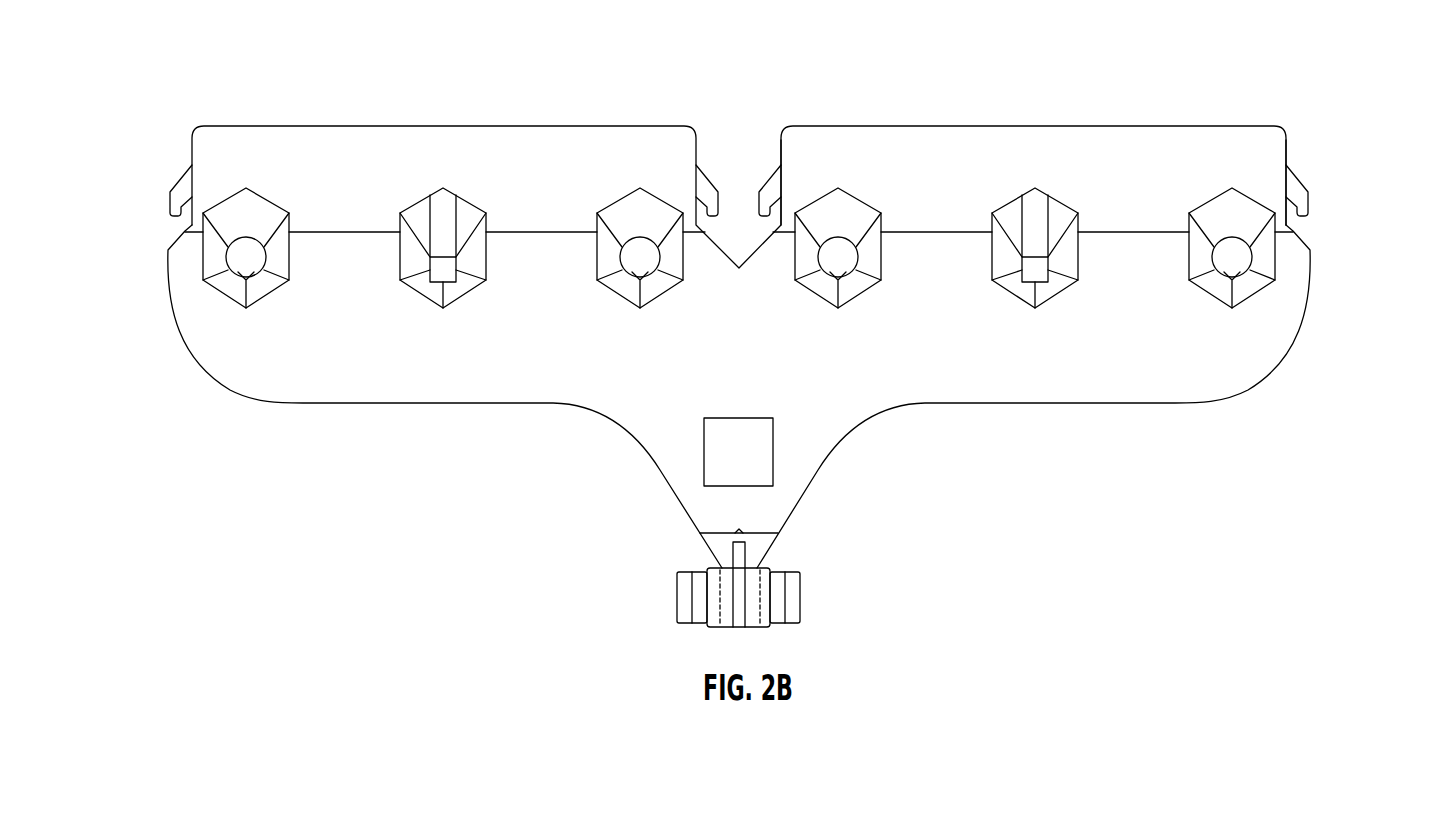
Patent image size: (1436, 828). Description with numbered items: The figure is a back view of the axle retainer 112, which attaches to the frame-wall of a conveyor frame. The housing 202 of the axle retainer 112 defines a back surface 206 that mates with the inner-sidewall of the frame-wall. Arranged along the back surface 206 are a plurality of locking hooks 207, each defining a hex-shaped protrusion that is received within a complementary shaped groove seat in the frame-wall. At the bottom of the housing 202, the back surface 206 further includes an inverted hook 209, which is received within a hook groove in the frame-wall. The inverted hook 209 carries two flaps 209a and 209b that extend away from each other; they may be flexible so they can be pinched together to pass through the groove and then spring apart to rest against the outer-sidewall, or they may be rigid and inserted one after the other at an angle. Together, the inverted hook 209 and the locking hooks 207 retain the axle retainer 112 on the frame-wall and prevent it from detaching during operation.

The axle retainer 112 is at (1270, 95).
The housing 202 is at (1264, 162).
The back surface 206 is at (1133, 147).
The locking hooks 207 is at (1265, 263).
The inverted hook 209 is at (802, 577).
The flap 209a is at (790, 602).
The flap 209b is at (677, 598).